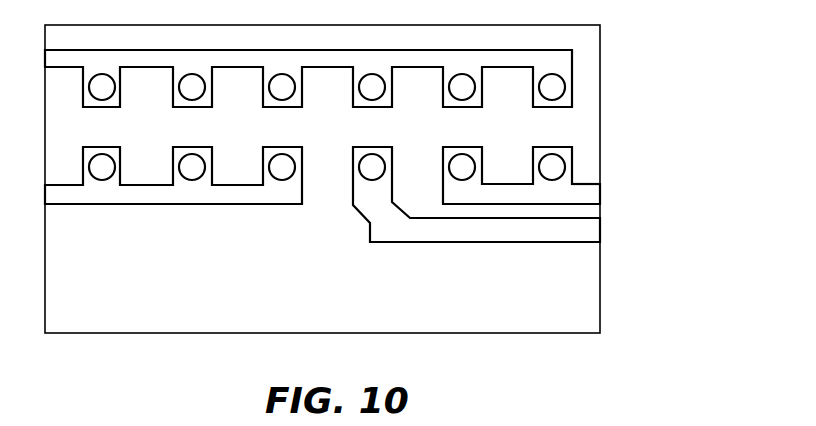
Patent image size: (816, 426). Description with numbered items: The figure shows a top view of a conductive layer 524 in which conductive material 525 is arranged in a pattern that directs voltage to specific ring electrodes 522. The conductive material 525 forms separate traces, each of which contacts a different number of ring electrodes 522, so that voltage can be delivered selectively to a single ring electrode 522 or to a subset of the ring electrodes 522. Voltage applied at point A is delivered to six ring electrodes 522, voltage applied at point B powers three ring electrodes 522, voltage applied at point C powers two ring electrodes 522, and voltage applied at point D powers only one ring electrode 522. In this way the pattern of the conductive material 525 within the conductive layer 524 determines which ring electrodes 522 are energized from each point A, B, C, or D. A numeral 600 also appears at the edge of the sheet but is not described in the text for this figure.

The conductive layer 524 is at (628, 135).
The conductive material 525 is at (568, 58).
The ring electrode 522 is at (558, 85).
The point A is at (58, 50).
The point B is at (58, 204).
The point C is at (601, 187).
The point D is at (601, 241).
The connector assembly (partial label) 600 is at (648, 419).